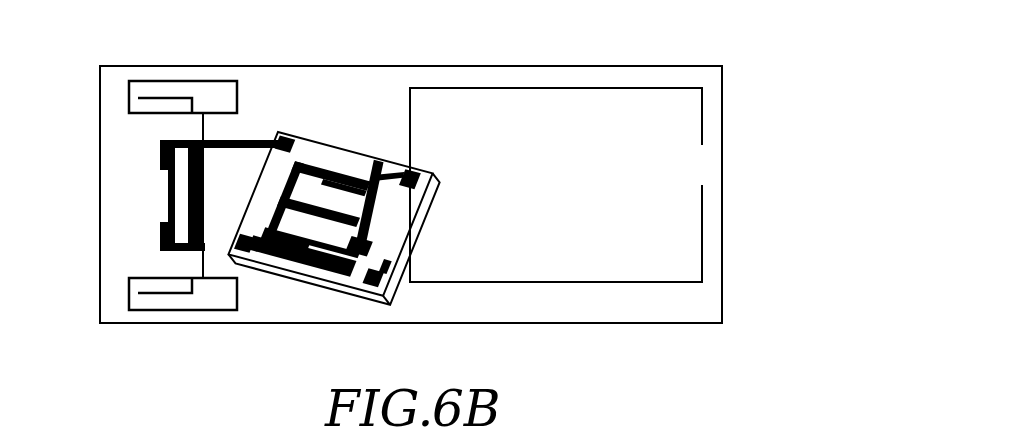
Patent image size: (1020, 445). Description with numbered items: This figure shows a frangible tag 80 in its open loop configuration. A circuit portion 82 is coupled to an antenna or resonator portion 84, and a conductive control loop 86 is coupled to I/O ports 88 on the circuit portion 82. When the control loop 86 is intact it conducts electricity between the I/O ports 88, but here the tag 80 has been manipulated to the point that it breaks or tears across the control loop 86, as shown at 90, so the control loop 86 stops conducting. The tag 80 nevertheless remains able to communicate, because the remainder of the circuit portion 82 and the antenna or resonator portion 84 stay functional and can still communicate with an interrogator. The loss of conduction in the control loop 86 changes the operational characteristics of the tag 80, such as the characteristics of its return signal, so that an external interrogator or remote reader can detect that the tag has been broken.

The frangible tag 80 is at (723, 90).
The circuit portion 82 is at (308, 292).
The antenna or resonator portion 84 is at (167, 197).
The conductive control loop 86 is at (702, 122).
The I/O ports 88 is at (405, 160).
The break in the control loop 90 is at (683, 172).